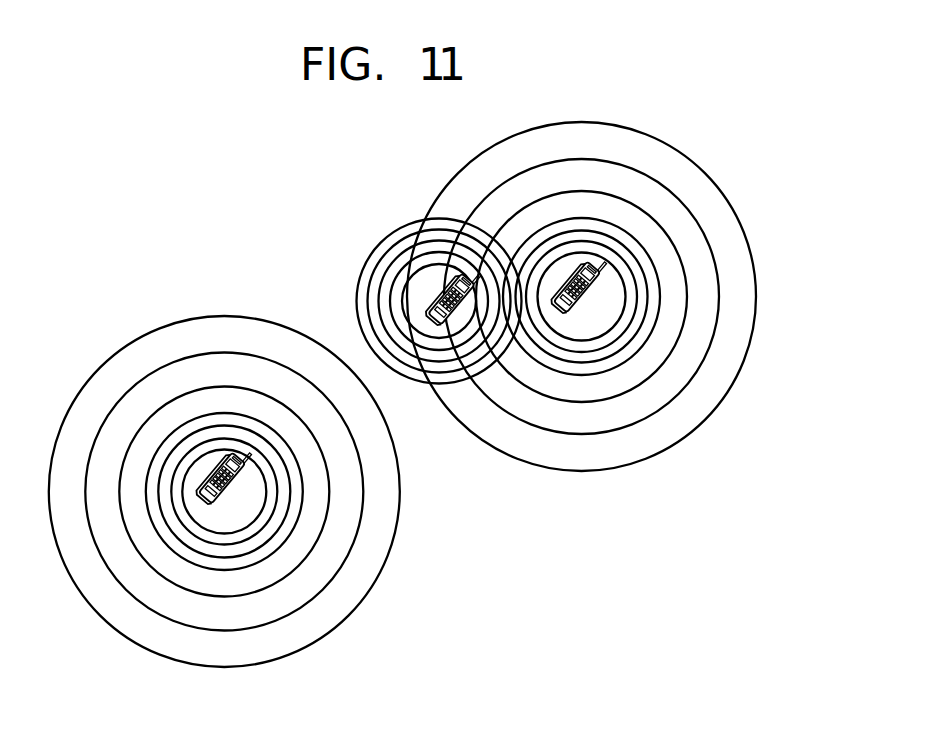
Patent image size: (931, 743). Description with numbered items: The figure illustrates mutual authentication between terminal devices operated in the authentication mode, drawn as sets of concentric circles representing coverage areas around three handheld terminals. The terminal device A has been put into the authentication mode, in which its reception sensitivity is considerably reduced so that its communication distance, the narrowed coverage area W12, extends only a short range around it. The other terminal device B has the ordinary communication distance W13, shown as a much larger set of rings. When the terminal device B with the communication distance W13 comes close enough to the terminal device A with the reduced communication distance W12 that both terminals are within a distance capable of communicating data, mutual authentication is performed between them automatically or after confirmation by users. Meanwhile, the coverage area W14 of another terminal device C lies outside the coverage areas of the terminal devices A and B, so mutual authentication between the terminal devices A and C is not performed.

The reduced communication distance W12 is at (361, 276).
The communication distance W13 is at (756, 283).
The coverage area W14 is at (397, 537).
The terminal device A is at (443, 294).
The terminal device B is at (580, 291).
The terminal device C is at (225, 486).